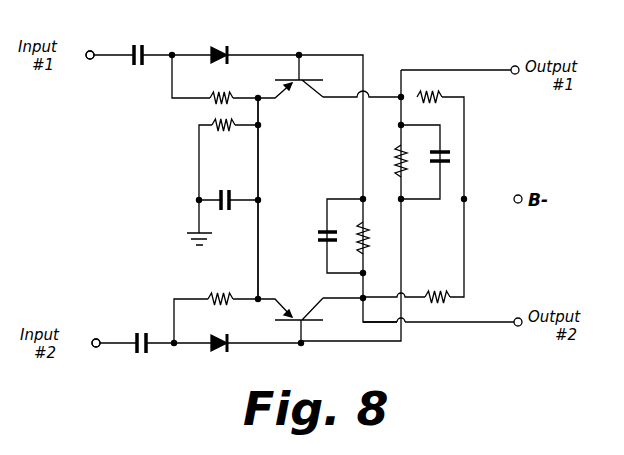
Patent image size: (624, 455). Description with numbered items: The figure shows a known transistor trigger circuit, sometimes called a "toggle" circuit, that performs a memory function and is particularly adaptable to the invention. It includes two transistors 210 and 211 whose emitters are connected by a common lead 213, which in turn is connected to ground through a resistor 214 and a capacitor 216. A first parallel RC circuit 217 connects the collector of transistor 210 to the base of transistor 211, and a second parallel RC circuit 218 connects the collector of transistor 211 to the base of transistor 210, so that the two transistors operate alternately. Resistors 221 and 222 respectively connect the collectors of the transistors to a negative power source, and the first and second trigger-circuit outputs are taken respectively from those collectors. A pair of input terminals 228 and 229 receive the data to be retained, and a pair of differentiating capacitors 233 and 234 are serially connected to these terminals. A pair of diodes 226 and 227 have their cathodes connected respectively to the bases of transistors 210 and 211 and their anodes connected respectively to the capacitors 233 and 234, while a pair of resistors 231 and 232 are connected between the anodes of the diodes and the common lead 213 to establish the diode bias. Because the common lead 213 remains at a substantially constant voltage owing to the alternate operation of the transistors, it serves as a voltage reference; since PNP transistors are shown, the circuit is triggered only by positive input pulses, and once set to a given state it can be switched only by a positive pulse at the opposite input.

The transistor 210 is at (316, 79).
The transistor 211 is at (312, 322).
The common lead 213 is at (262, 163).
The resistor 214 is at (220, 131).
The capacitor 216 is at (222, 211).
The first parallel RC circuit 217 is at (426, 164).
The second parallel RC circuit 218 is at (356, 236).
The resistor 221 is at (444, 94).
The resistor 222 is at (433, 290).
The diode 226 is at (240, 35).
The diode 227 is at (214, 352).
The input terminal 228 is at (92, 51).
The input terminal 229 is at (96, 347).
The resistor 231 is at (210, 91).
The resistor 232 is at (214, 293).
The differentiating capacitor 233 is at (136, 66).
The differentiating capacitor 234 is at (154, 322).